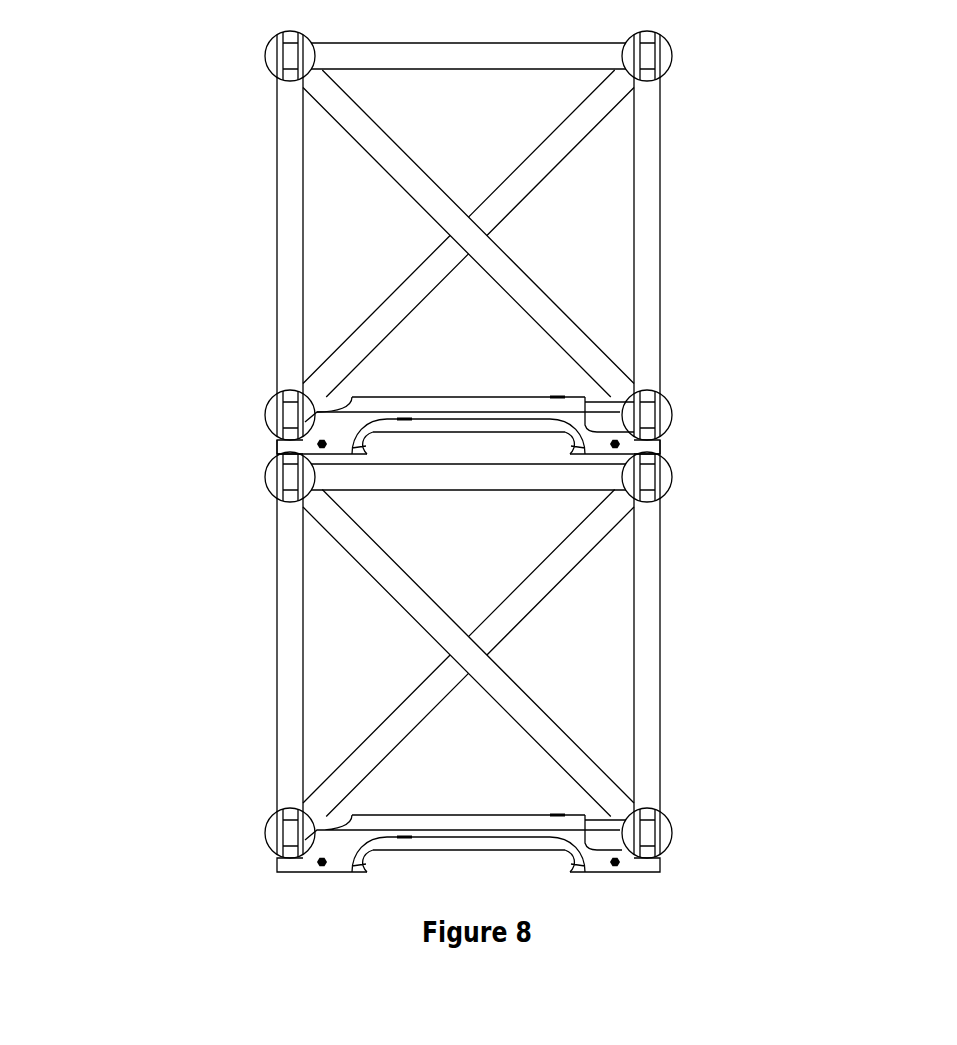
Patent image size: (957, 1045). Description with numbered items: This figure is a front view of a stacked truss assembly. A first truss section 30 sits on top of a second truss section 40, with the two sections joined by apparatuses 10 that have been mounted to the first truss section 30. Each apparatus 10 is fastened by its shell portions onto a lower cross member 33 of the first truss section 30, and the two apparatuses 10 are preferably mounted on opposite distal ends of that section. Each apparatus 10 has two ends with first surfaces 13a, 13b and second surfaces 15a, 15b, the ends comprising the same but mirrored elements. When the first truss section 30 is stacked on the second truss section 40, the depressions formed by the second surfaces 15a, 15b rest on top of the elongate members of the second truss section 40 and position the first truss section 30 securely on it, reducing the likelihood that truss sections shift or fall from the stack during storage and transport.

The apparatus 10 is at (608, 433).
The first surface 13a is at (283, 427).
The first surface 13b is at (649, 429).
The second surface 15a is at (280, 453).
The second surface 15b is at (664, 457).
The first truss section 30 is at (721, 194).
The lower cross member 33 is at (319, 402).
The second truss section 40 is at (724, 709).